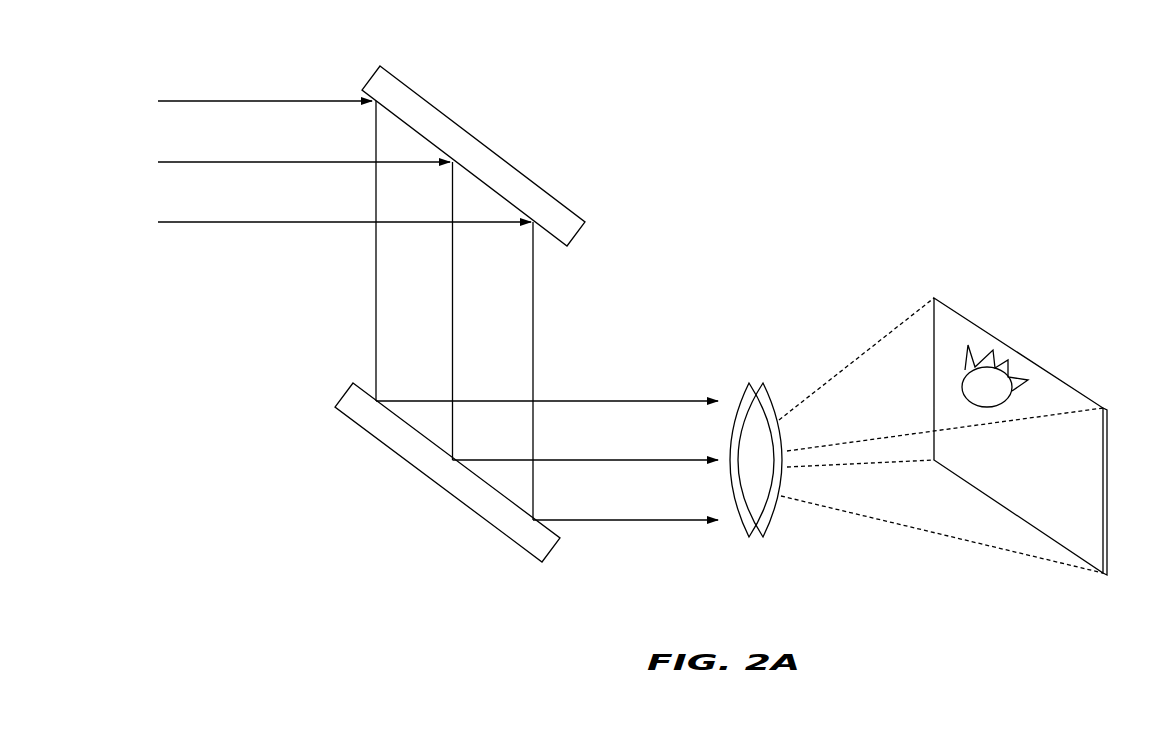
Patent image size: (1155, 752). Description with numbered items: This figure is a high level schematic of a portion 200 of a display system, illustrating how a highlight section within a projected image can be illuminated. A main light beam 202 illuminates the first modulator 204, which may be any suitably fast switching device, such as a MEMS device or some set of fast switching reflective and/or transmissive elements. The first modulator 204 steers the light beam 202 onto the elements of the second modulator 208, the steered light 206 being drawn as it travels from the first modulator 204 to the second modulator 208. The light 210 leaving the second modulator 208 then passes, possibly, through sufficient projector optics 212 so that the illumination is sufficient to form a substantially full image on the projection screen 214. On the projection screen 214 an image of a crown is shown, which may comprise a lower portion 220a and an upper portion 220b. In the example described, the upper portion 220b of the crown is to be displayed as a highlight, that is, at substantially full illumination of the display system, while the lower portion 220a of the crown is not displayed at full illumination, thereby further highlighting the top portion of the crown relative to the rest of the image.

The portion of the display system 200 is at (648, 44).
The main light beam 202 is at (265, 100).
The first modulator 204 is at (417, 92).
The reflected light beams 206 is at (375, 306).
The second modulator 208 is at (459, 502).
The output light beams 210 is at (648, 400).
The projector optics 212 is at (754, 538).
The projection screen 214 is at (1078, 540).
The lower portion 220a is at (962, 383).
The upper portion 220b is at (983, 353).